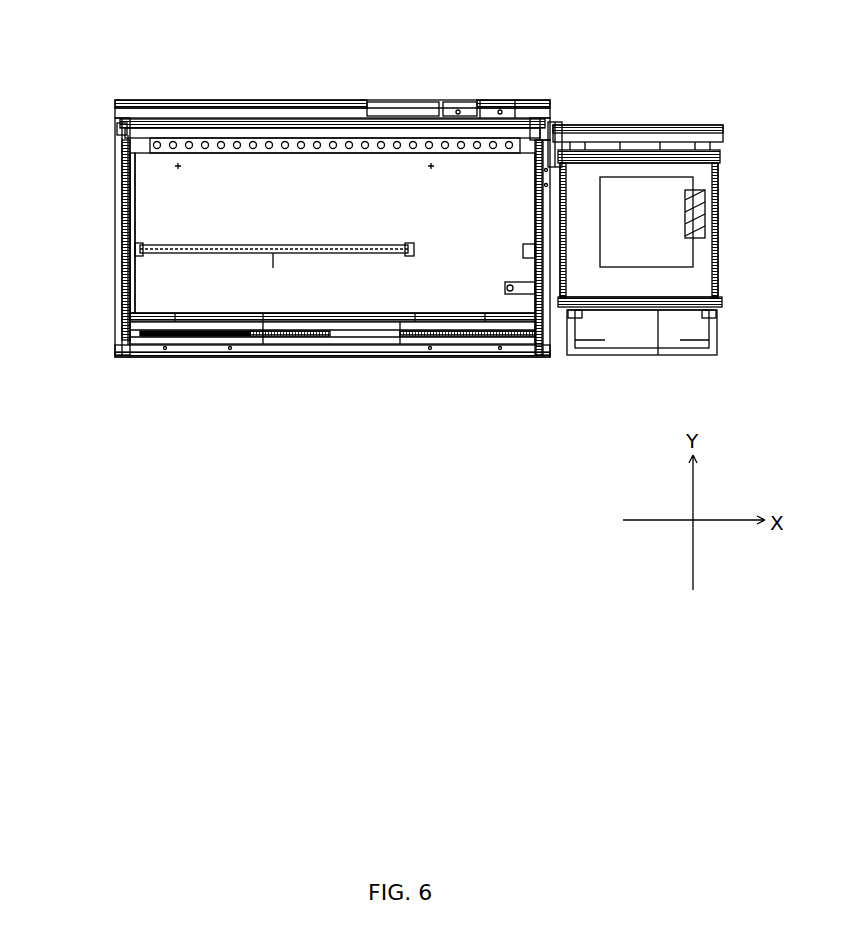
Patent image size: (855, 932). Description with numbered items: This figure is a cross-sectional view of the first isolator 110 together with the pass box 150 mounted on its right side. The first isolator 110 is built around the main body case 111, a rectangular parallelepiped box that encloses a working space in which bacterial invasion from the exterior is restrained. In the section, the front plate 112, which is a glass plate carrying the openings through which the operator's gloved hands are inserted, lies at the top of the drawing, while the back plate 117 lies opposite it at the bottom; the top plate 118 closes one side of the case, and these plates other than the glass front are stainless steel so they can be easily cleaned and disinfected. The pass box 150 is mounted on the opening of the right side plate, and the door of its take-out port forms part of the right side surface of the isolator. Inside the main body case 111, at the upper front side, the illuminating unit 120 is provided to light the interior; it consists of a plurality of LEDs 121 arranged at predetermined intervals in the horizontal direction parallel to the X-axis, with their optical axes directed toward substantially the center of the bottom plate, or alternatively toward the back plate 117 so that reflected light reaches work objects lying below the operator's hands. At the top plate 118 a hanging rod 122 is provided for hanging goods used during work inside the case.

The first isolator 110 is at (420, 90).
The main body case 111 is at (340, 292).
The front plate 112 is at (207, 106).
The back plate 117 is at (453, 322).
The top plate 118 is at (155, 205).
The illuminating unit 120 is at (155, 152).
The LEDs 121 is at (213, 148).
The hanging rod 122 is at (167, 254).
The pass box 150 is at (636, 118).